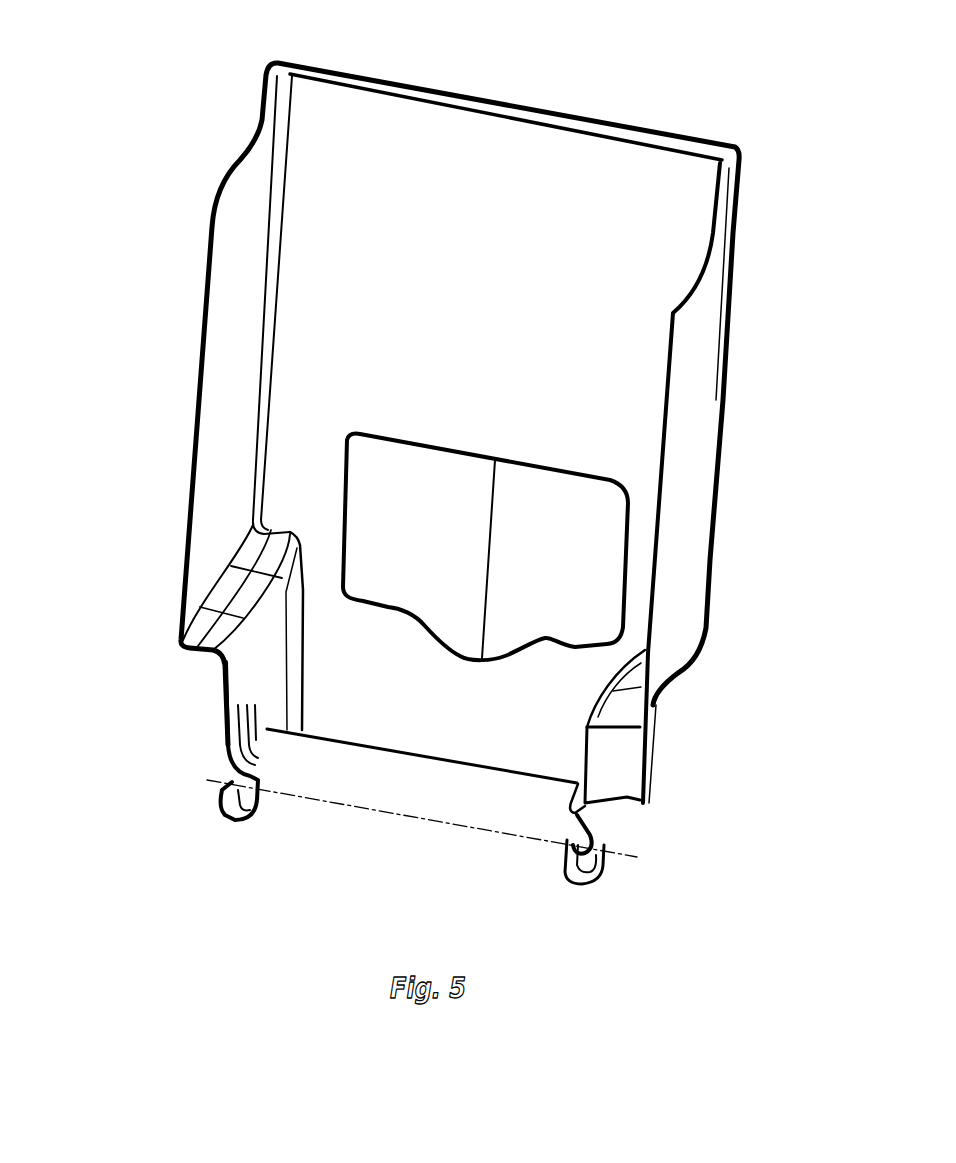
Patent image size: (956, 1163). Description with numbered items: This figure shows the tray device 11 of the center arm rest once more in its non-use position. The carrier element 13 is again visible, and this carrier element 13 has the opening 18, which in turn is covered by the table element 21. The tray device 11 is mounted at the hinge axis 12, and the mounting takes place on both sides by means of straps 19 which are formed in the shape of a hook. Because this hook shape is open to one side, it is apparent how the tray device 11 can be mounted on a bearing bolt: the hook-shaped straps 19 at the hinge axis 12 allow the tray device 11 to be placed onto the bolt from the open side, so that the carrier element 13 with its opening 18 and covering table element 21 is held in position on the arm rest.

The tray device 11 is at (130, 38).
The hinge axis 12 is at (390, 813).
The carrier element 13 is at (327, 320).
The opening 18 is at (345, 505).
The straps 19 is at (592, 827).
The table element 21 is at (572, 562).